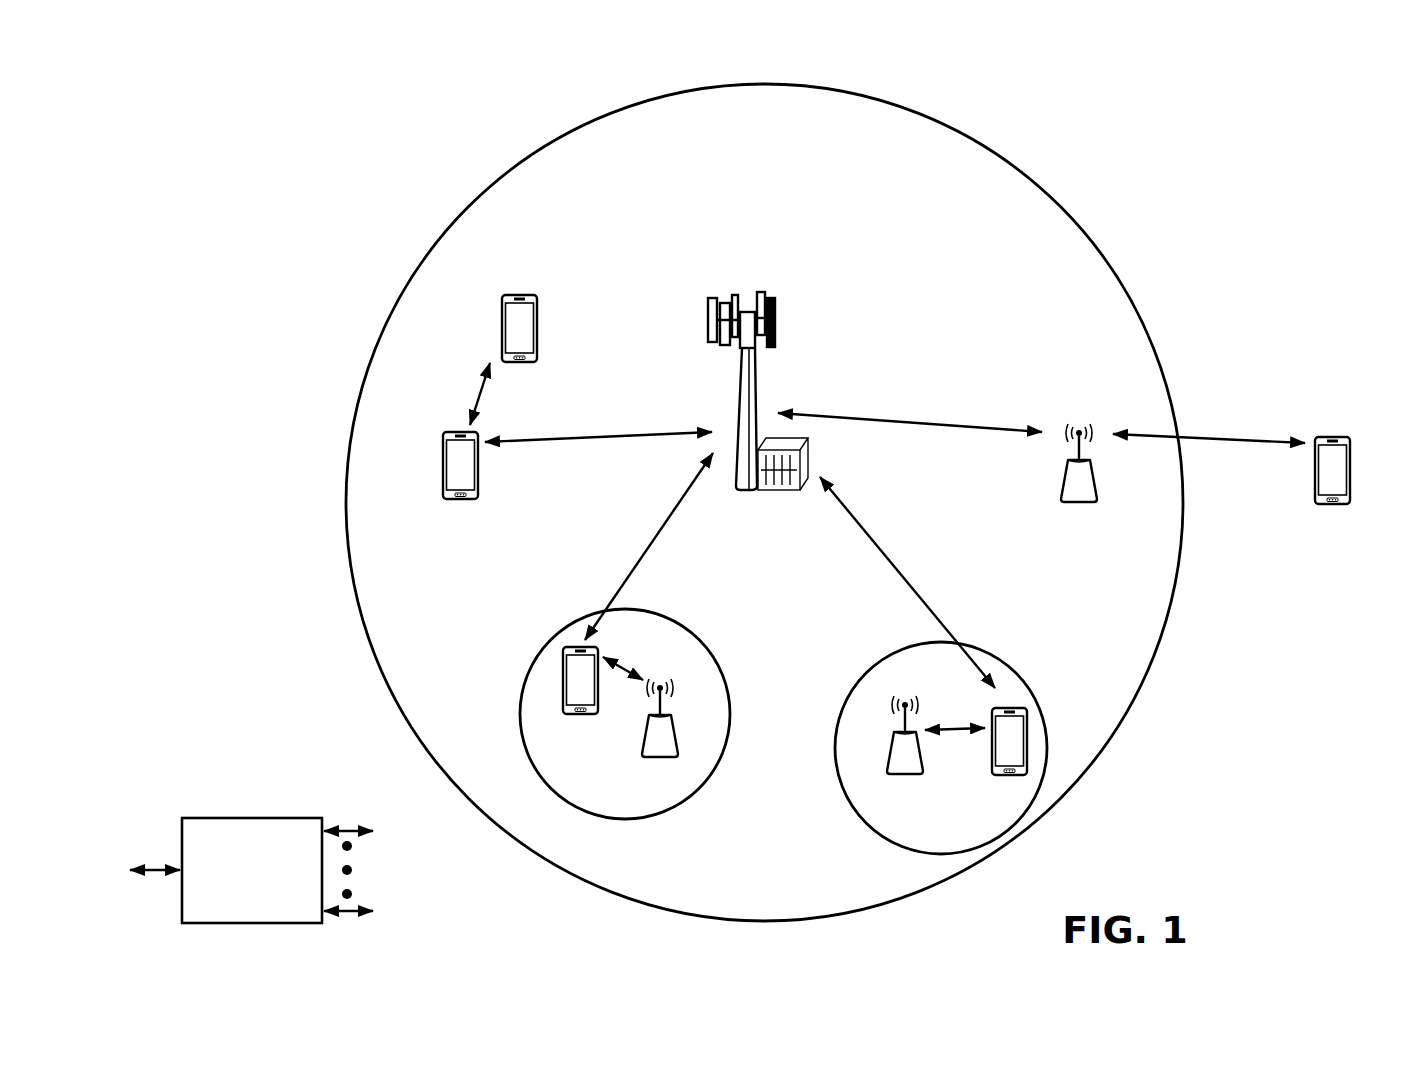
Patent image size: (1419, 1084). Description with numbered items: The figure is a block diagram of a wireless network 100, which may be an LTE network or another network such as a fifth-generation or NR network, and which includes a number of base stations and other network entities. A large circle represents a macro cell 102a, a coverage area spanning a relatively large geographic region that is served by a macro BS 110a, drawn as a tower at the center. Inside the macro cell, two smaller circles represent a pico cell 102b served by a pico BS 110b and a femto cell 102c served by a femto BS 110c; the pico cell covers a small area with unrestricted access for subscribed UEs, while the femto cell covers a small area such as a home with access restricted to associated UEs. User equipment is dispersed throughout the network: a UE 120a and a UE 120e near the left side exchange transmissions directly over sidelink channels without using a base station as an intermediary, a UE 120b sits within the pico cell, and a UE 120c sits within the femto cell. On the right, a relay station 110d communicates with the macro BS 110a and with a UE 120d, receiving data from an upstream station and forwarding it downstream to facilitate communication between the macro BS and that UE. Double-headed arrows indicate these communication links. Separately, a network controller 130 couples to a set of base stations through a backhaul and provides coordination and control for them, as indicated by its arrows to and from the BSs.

The wireless network 100 is at (236, 80).
The macro cell 102a is at (1043, 190).
The pico cell 102b is at (707, 648).
The femto cell 102c is at (872, 664).
The macro BS 110a is at (753, 285).
The pico BS 110b is at (681, 752).
The femto BS 110c is at (886, 766).
The relay station 110d is at (1081, 426).
The UE 120a is at (443, 462).
The UE 120b is at (568, 714).
The UE 120c is at (995, 776).
The UE 120d is at (1340, 437).
The UE 120e is at (503, 318).
The network controller 130 is at (250, 818).